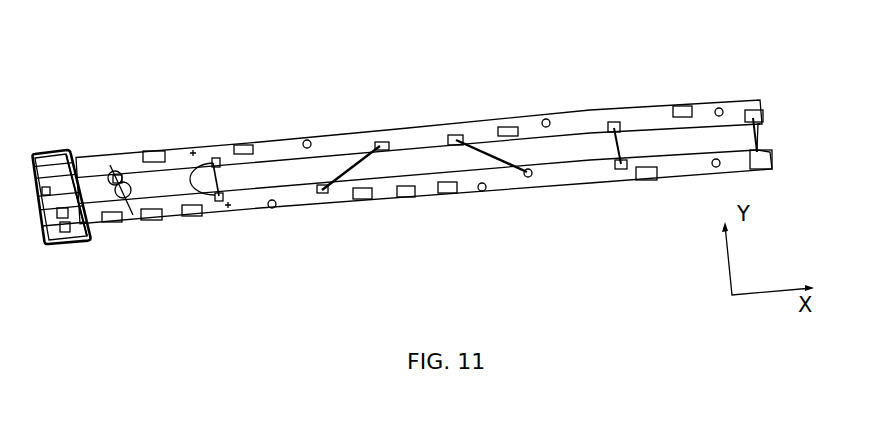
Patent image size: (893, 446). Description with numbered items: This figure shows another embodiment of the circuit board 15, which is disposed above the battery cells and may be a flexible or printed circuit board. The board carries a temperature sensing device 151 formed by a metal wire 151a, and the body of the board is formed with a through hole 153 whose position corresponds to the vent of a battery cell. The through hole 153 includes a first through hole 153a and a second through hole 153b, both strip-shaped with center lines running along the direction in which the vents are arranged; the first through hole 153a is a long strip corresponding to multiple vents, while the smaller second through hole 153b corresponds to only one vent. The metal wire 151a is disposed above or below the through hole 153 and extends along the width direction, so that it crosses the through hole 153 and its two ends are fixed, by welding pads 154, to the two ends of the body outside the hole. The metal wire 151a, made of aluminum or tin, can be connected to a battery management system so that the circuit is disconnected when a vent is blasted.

The circuit board 15 is at (449, 156).
The temperature sensing device 151 is at (578, 120).
The metal wire 151a is at (108, 178).
The through hole 153 is at (203, 109).
The first through hole 153a is at (267, 162).
The second through hole 153b is at (123, 151).
The welding pad 154 is at (120, 198).